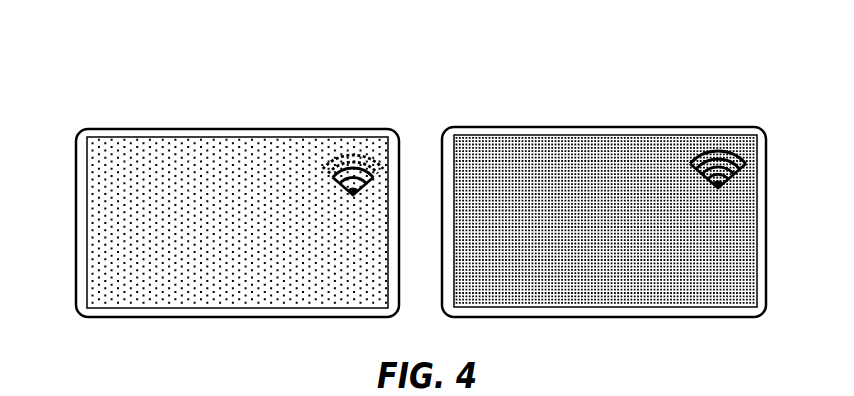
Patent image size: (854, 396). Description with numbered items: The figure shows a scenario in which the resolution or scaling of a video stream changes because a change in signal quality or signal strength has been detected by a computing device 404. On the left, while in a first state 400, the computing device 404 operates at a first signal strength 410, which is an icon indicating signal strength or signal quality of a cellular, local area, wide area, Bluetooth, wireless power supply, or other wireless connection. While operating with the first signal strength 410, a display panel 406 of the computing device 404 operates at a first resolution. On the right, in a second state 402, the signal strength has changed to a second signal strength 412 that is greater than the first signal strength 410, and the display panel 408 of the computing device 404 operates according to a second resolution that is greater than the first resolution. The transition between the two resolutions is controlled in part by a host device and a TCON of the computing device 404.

The first state 400 is at (237, 170).
The second state 402 is at (605, 169).
The computing device 404 is at (122, 129).
The display panel 406 is at (254, 233).
The display panel 408 is at (619, 233).
The first signal strength 410 is at (358, 168).
The second signal strength 412 is at (718, 150).